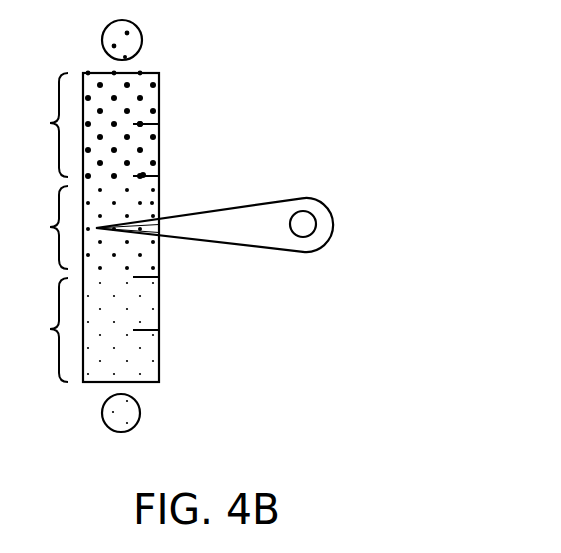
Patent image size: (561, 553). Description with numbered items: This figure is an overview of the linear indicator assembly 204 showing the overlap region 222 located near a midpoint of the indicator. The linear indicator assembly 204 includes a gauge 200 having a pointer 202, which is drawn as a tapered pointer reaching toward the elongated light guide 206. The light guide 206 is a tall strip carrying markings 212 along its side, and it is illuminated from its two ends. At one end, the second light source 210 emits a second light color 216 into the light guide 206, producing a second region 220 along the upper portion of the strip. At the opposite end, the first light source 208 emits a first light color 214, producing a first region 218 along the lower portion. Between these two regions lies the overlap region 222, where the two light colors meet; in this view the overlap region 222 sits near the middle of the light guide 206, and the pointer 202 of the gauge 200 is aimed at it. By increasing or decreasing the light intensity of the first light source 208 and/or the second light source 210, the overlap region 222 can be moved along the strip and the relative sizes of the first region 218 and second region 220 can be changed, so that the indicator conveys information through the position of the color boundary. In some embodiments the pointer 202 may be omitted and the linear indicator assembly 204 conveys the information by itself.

The gauge 200 is at (258, 246).
The pointer 202 is at (253, 235).
The linear indicator assembly 204 is at (486, 133).
The light guide 206 is at (150, 202).
The first light source 208 is at (118, 413).
The second light source 210 is at (120, 40).
The markings 212 is at (144, 174).
The first light color 214 is at (128, 414).
The second light color 216 is at (131, 33).
The first region 218 is at (82, 330).
The second region 220 is at (83, 125).
The overlap region 222 is at (83, 228).